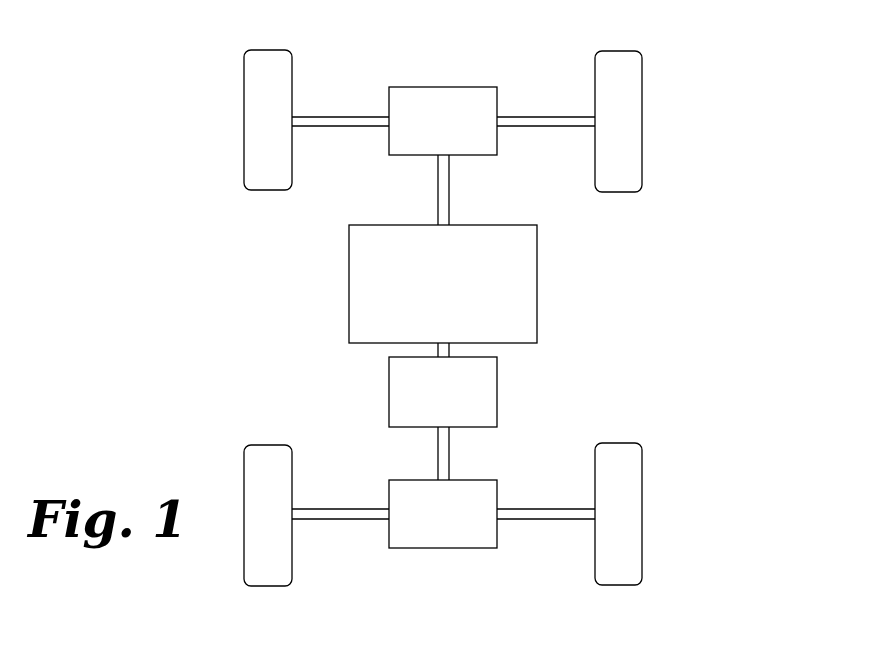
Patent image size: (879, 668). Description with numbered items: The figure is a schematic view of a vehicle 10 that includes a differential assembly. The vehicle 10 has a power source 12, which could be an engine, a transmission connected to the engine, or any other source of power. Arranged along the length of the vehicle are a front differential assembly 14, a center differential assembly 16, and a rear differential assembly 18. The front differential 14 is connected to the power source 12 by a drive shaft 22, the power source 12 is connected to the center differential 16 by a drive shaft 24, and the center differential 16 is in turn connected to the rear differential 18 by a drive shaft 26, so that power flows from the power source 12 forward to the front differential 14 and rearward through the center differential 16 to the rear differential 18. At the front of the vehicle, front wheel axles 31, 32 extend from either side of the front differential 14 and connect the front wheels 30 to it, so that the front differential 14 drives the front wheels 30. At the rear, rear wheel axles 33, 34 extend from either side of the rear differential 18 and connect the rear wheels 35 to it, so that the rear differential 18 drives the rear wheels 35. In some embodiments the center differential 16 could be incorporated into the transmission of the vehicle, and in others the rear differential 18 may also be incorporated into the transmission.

The vehicle 10 is at (692, 76).
The power source 12 is at (525, 295).
The front differential assembly 14 is at (447, 92).
The center differential assembly 16 is at (477, 409).
The rear differential assembly 18 is at (445, 543).
The drive shaft 22 is at (443, 202).
The drive shaft 24 is at (430, 348).
The drive shaft 26 is at (444, 462).
The front wheels 30 is at (253, 120).
The front wheel axle 31 is at (355, 120).
The front wheel axle 32 is at (562, 120).
The rear wheel axle 33 is at (355, 515).
The rear wheel axle 34 is at (562, 513).
The rear wheels 35 is at (253, 515).